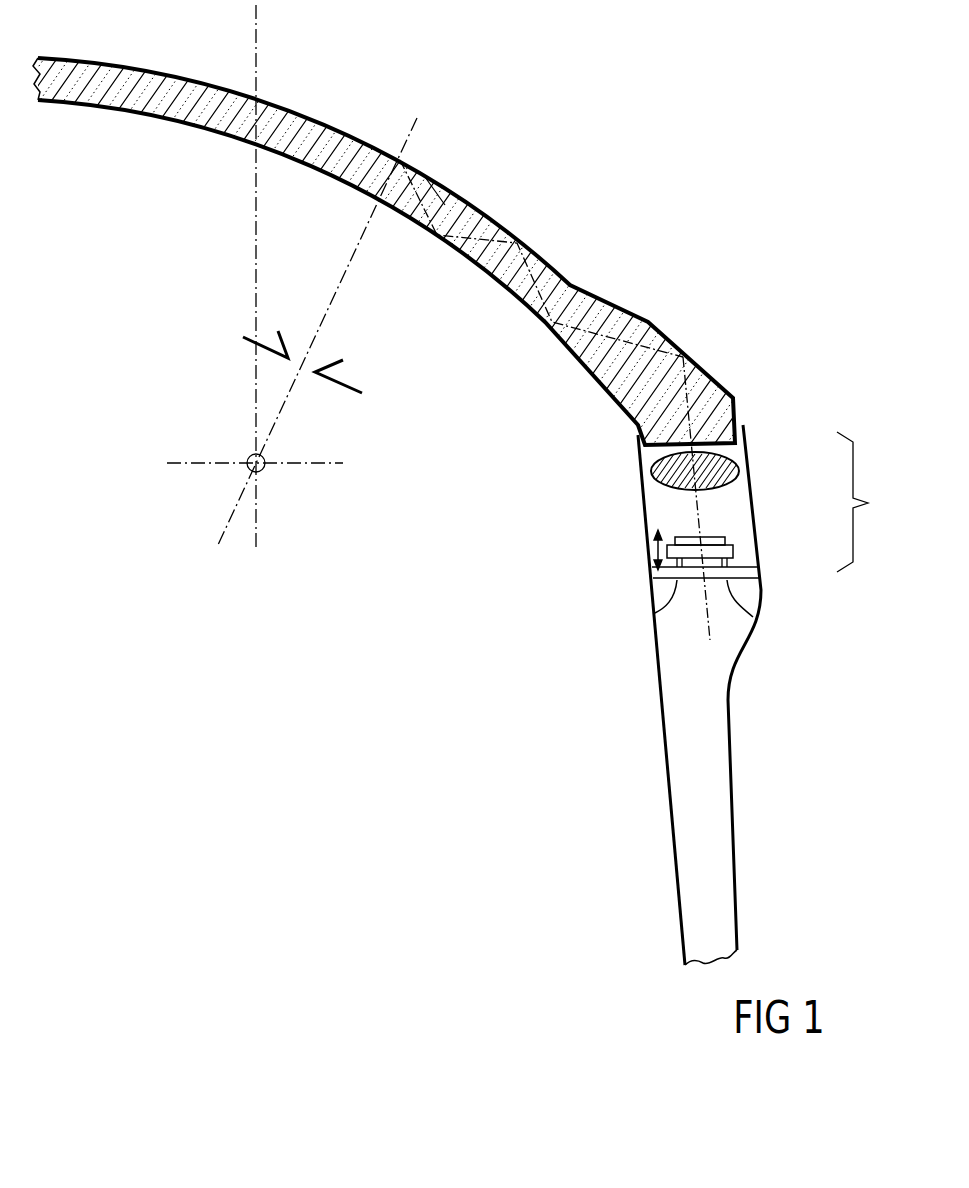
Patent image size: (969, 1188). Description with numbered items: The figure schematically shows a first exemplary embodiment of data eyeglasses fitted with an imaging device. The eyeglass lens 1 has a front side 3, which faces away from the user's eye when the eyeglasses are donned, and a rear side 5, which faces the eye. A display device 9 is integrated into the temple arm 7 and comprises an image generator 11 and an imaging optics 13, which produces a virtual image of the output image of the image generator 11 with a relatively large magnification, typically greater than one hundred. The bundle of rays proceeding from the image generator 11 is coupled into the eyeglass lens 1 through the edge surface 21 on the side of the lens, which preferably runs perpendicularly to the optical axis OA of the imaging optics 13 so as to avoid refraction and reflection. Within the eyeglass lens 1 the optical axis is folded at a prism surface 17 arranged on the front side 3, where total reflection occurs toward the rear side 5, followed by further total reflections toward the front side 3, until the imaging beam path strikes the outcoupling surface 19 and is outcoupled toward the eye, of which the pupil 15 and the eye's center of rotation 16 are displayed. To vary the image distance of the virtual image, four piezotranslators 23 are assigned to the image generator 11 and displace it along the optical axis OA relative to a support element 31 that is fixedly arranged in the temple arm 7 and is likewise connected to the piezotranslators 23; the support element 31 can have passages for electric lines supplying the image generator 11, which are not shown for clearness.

The eyeglass lens 1 is at (145, 83).
The front side 3 is at (507, 230).
The rear side 5 is at (475, 268).
The temple arm 7 is at (668, 795).
The display device 9 is at (862, 502).
The image generator 11 is at (742, 542).
The imaging optics 13 is at (667, 472).
The pupil 15 is at (353, 393).
The eye's center of rotation 16 is at (261, 470).
The prism surface 17 is at (687, 350).
The outcoupling surface 19 is at (365, 128).
The edge surface 21 is at (713, 440).
The piezotranslators 23 is at (655, 613).
The support element 31 is at (747, 578).
The optical axis OA is at (700, 520).